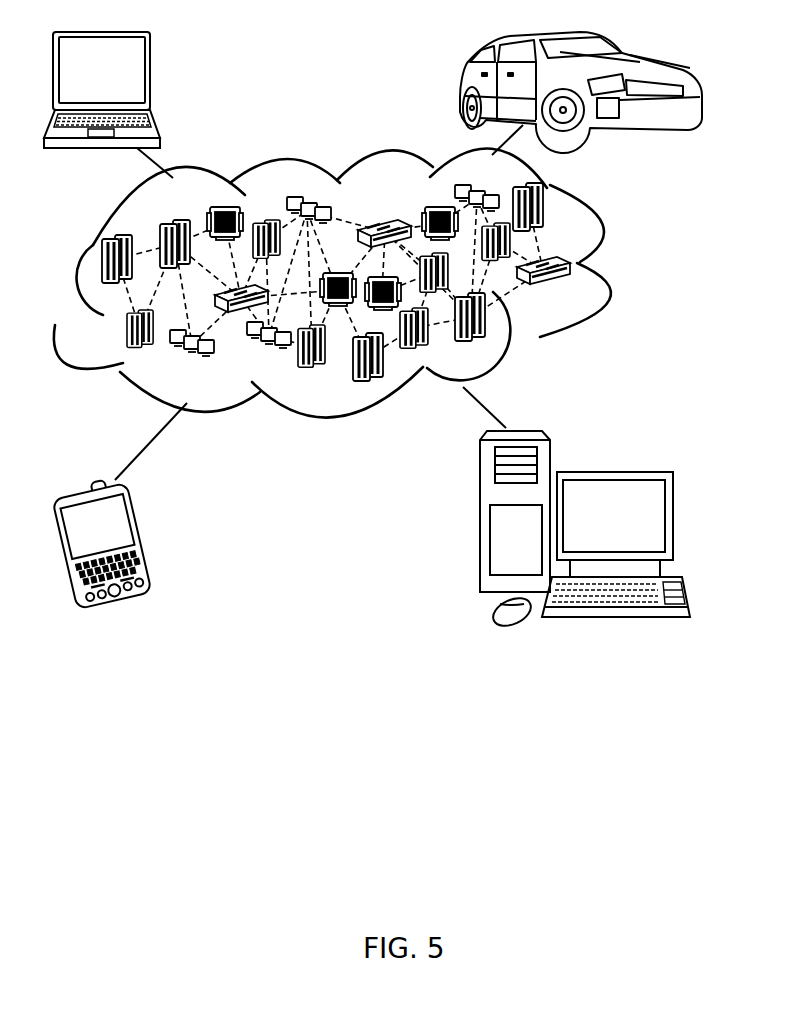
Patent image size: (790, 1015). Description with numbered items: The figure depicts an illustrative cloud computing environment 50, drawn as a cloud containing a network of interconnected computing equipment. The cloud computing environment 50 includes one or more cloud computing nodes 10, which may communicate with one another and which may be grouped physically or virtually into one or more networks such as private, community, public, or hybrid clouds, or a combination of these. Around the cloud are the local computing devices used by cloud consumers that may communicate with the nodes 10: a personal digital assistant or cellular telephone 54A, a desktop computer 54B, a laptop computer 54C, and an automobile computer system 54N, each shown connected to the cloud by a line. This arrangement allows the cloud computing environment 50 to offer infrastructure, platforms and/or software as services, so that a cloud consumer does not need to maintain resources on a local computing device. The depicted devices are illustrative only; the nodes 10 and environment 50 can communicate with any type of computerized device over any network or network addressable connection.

The cloud computing node 10 is at (358, 302).
The cloud computing environment 50 is at (606, 258).
The personal digital assistant or cellular telephone 54A is at (143, 533).
The desktop computer 54B is at (614, 472).
The laptop computer 54C is at (152, 73).
The automobile computer system 54N is at (460, 86).